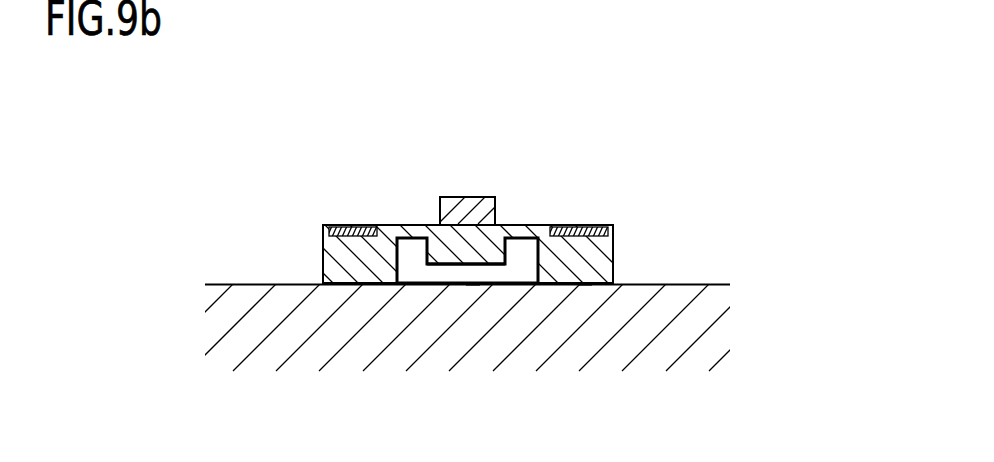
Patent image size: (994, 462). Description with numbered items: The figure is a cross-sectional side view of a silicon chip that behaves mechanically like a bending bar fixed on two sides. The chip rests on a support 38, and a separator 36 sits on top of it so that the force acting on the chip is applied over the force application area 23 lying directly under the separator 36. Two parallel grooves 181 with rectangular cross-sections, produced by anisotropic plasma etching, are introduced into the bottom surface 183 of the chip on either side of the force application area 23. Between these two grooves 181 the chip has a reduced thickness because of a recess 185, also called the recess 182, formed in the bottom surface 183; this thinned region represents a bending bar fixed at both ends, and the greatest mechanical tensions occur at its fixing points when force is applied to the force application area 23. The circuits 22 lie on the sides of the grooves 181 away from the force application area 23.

The circuits 22 is at (352, 225).
The force application area 23 is at (478, 227).
The separator 36 is at (457, 211).
The support 38 is at (697, 328).
The grooves 181 is at (410, 248).
The recess 182 is at (462, 272).
The bottom surface 183 is at (585, 304).
The recess 185 is at (474, 304).